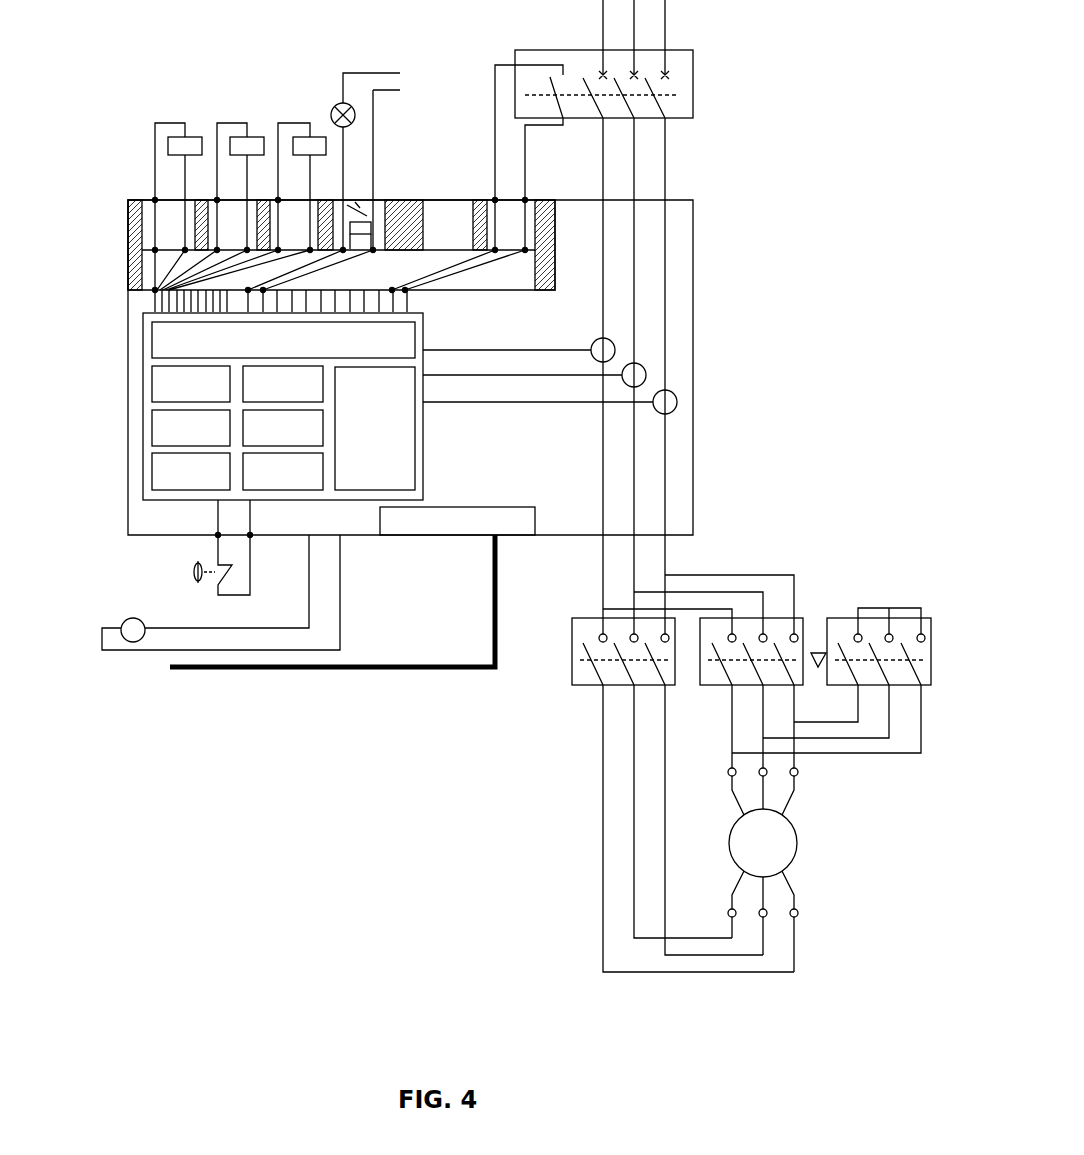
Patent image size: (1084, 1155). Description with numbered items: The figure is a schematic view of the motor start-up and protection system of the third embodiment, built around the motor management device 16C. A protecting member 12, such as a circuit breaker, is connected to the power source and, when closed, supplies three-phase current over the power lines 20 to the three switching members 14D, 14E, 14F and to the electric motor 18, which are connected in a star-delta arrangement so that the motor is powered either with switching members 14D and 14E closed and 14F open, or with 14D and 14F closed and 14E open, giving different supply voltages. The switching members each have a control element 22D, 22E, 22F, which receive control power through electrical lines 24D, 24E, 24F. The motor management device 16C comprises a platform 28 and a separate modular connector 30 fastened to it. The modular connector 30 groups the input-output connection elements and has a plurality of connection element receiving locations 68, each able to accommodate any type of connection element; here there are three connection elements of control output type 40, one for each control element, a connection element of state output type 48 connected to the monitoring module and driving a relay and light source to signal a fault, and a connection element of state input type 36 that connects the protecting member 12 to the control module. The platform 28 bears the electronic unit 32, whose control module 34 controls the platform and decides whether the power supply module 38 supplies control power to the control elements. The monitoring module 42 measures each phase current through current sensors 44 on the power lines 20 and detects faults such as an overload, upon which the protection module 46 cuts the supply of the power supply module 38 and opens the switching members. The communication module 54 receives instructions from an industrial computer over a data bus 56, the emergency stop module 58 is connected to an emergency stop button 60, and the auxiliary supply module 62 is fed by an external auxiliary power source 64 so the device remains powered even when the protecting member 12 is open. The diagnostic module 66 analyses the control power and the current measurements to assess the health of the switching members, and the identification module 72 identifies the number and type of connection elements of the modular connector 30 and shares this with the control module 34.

The protecting member 12 is at (695, 83).
The switching member 14D is at (577, 688).
The switching member 14E is at (712, 688).
The switching member 14F is at (843, 618).
The motor management device 16C is at (115, 112).
The electric motor 18 is at (763, 870).
The power lines 20 is at (603, 280).
The control element 22D is at (193, 137).
The control element 22E is at (257, 137).
The control element 22F is at (318, 137).
The electrical line 24D is at (153, 137).
The electrical line 24E is at (222, 122).
The electrical line 24F is at (285, 122).
The platform 28 is at (118, 535).
The modular connector 30 is at (118, 200).
The electronic unit 32 is at (427, 437).
The control module 34 is at (191, 384).
The connection element of state input type 36 is at (530, 198).
The power supply module 38 is at (283, 384).
The connection element of control output type 40 is at (150, 200).
The monitoring module 42 is at (375, 428).
The current sensors 44 is at (615, 348).
The protection module 46 is at (191, 428).
The connection element of state output type 48 is at (375, 200).
The communication module 54 is at (457, 521).
The data bus 56 is at (357, 670).
The emergency stop module 58 is at (191, 471).
The emergency stop button 60 is at (190, 572).
The auxiliary supply module 62 is at (283, 471).
The auxiliary power source 64 is at (124, 620).
The diagnostic module 66 is at (283, 428).
The connection element receiving location 68 is at (450, 212).
The identification module 72 is at (283, 340).